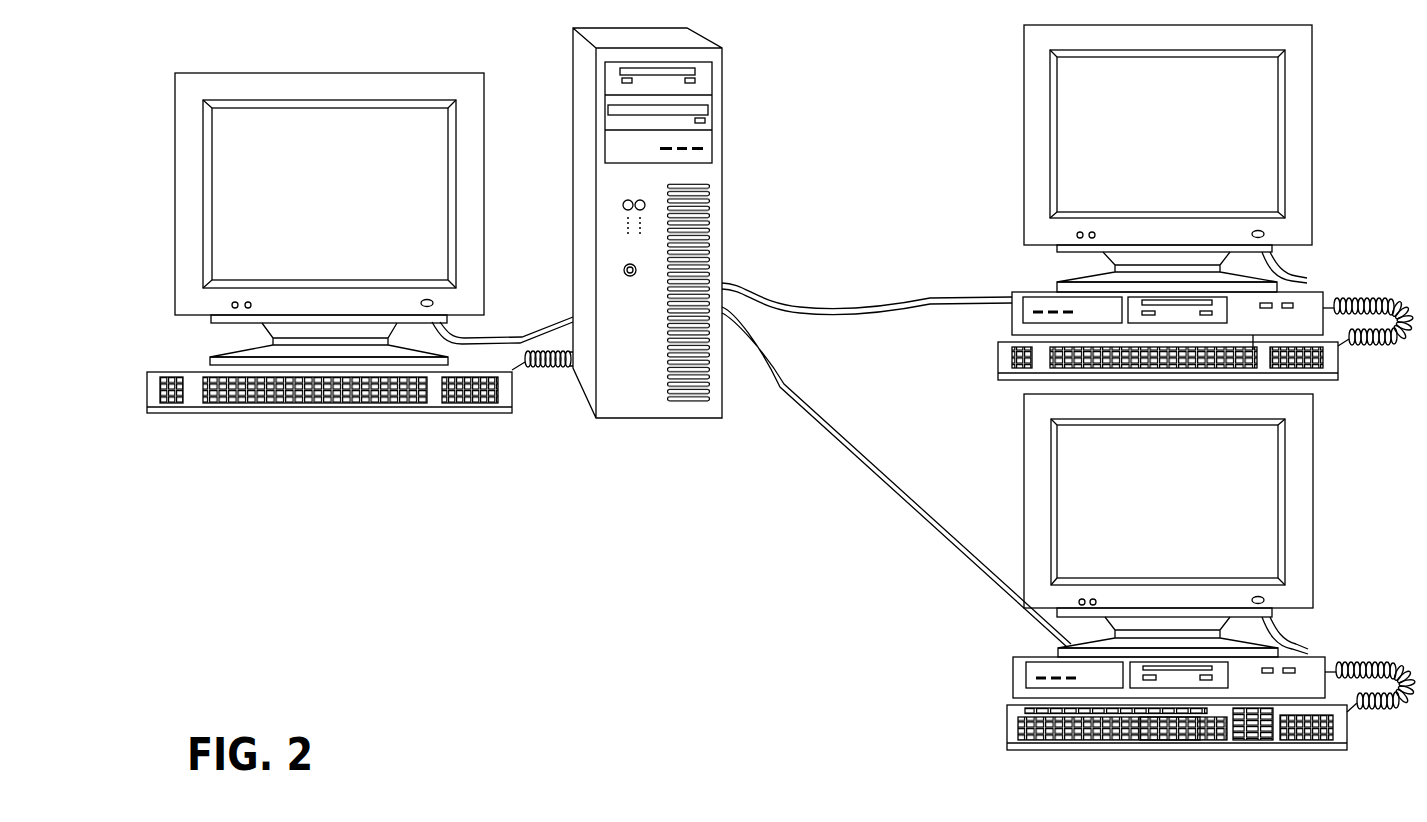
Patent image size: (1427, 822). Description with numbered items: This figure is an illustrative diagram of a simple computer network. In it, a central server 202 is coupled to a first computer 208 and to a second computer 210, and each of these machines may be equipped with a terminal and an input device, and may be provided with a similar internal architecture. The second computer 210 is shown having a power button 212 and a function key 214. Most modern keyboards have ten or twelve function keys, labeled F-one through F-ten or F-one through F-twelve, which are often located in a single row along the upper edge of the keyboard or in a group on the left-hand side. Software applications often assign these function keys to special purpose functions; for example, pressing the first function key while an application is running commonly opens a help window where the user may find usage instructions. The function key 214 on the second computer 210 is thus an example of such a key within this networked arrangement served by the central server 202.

The central server 202 is at (577, 262).
The first computer 208 is at (1024, 292).
The second computer 210 is at (1027, 657).
The power button 212 is at (1295, 667).
The function key 214 is at (1228, 735).